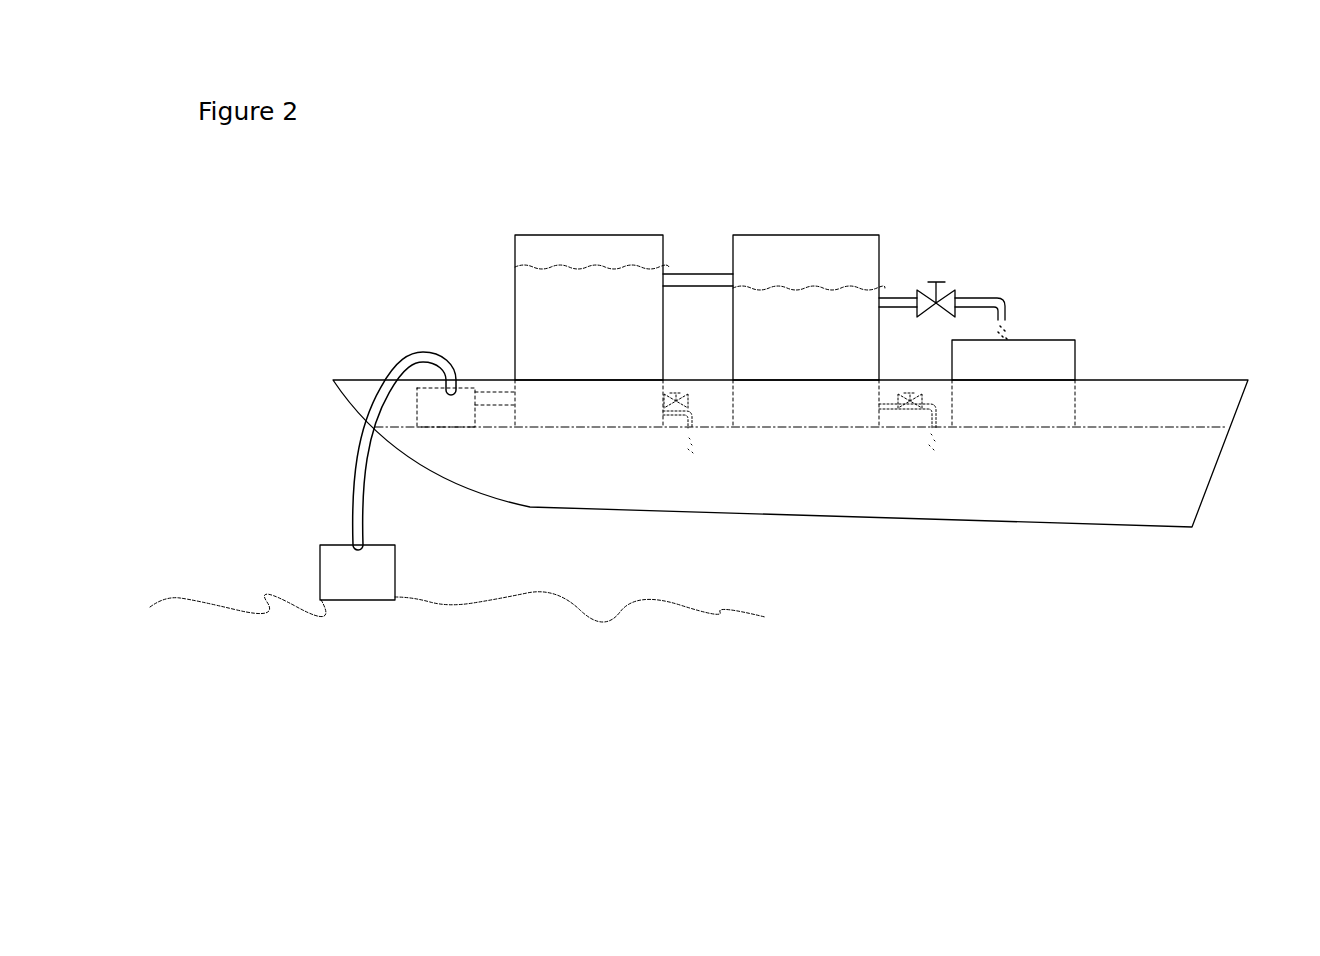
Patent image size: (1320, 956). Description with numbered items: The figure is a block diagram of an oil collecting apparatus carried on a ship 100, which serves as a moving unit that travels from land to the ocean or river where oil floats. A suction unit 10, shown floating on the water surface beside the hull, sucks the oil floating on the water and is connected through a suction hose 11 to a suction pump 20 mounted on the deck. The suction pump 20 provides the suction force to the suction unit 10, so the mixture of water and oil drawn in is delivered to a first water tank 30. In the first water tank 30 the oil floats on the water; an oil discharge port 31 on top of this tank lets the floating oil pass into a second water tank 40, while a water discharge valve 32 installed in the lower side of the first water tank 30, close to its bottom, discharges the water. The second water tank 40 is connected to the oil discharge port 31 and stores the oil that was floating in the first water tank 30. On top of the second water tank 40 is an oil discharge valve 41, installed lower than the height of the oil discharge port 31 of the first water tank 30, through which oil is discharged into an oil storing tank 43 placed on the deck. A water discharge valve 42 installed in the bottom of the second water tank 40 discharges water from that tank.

The suction unit 10 is at (382, 571).
The suction hose 11 is at (358, 448).
The suction pump 20 is at (472, 388).
The first water tank 30 is at (593, 248).
The oil discharge port 31 is at (715, 280).
The water discharge valve 32 is at (675, 414).
The second water tank 40 is at (823, 248).
The oil discharge valve 41 is at (935, 280).
The water discharge valve 42 is at (907, 420).
The oil storing tank 43 is at (1048, 350).
The ship 100 is at (1178, 395).